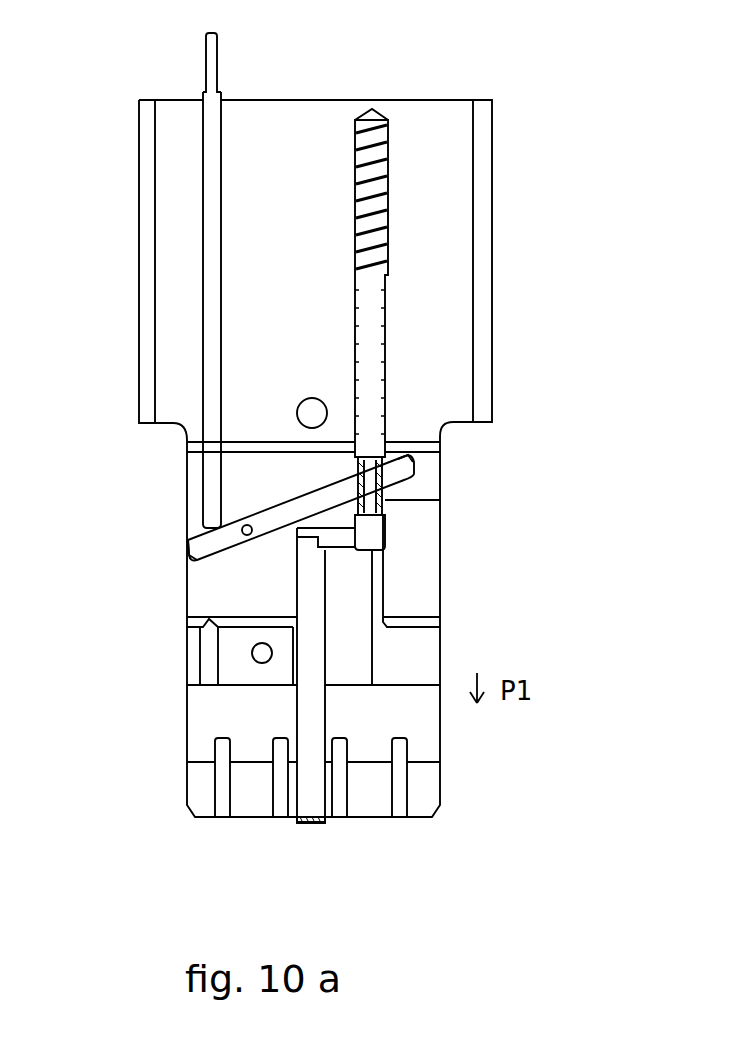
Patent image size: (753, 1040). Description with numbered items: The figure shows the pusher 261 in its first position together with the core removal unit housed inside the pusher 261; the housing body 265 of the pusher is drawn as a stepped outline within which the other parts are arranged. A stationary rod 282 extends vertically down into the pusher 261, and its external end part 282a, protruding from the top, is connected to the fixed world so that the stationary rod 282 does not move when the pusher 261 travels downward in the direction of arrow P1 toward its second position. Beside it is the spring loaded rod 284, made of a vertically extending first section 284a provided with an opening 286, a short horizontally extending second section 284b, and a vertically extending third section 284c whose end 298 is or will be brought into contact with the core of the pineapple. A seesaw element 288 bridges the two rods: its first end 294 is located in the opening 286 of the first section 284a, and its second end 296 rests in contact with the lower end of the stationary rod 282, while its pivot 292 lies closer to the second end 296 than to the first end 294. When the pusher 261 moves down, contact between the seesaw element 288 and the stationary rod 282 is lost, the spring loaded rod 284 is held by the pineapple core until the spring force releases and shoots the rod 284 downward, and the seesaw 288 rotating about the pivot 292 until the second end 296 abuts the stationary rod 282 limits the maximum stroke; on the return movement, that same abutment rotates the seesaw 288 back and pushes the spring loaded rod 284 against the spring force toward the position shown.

The pusher 261 is at (590, 77).
The housing 265 is at (421, 99).
The stationary rod 282 is at (213, 238).
The external end part 282a is at (221, 60).
The spring loaded rod 284 is at (368, 366).
The first section 284a is at (370, 297).
The second section 284b is at (343, 560).
The third section 284c is at (312, 676).
The opening 286 is at (386, 500).
The seesaw element 288 is at (274, 520).
The pivot 292 is at (247, 540).
The first end 294 is at (392, 470).
The second end 296 is at (203, 548).
The end 298 is at (313, 824).